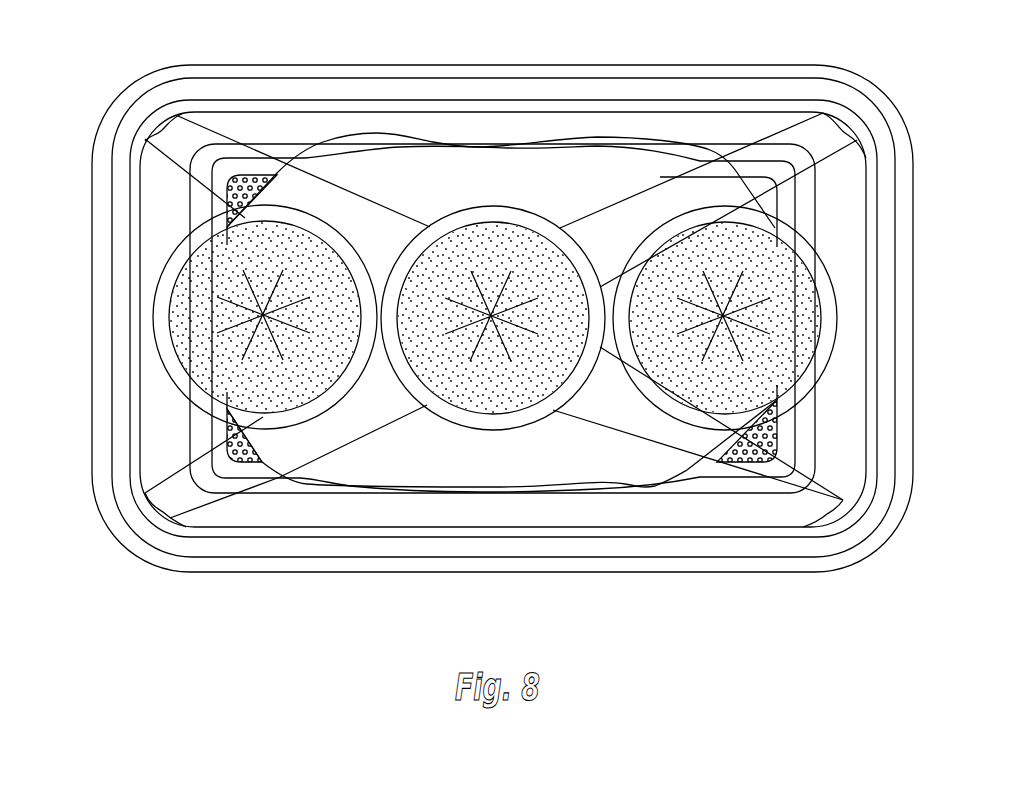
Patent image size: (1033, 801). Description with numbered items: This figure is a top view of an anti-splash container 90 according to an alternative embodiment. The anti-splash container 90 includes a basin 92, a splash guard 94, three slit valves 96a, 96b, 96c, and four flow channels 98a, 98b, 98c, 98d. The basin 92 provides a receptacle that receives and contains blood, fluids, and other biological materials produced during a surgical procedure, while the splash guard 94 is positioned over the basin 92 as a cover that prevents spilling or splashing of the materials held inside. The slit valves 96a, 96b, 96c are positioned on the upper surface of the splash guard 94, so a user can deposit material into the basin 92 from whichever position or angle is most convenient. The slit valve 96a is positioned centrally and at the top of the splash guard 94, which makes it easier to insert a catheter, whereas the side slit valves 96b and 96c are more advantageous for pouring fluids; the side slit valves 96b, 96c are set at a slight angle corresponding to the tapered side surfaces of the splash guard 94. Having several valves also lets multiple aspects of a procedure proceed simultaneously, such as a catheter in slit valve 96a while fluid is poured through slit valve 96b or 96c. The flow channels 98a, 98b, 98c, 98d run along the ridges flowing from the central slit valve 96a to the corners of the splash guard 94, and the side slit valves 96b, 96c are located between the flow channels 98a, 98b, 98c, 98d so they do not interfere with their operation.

The anti-splash container 90 is at (76, 514).
The basin 92 is at (104, 323).
The splash guard 94 is at (160, 237).
The slit valve 96a is at (498, 240).
The slit valve 96b is at (305, 270).
The slit valve 96c is at (758, 263).
The flow channel 98a is at (213, 153).
The flow channel 98b is at (233, 485).
The flow channel 98c is at (760, 473).
The flow channel 98d is at (653, 200).